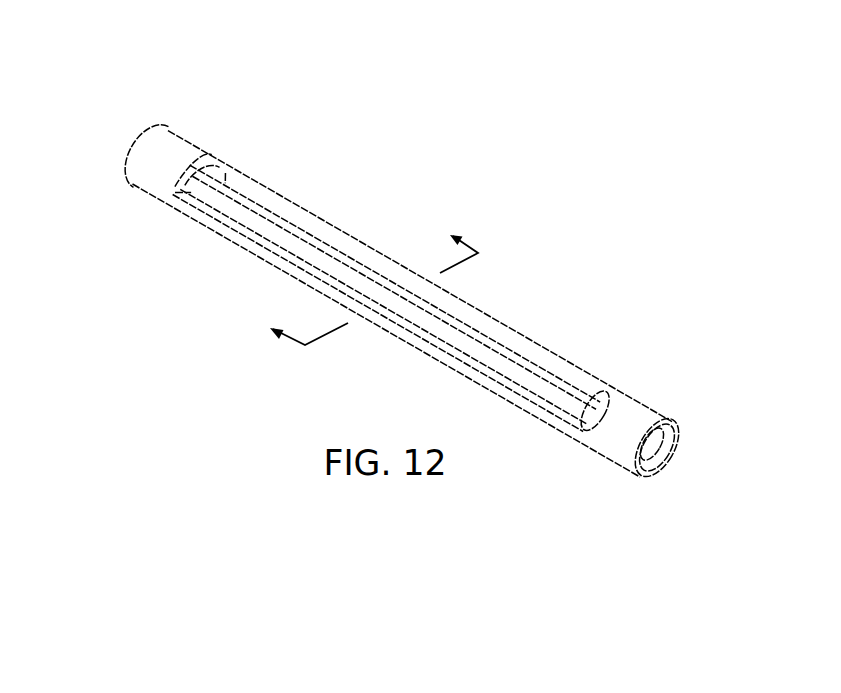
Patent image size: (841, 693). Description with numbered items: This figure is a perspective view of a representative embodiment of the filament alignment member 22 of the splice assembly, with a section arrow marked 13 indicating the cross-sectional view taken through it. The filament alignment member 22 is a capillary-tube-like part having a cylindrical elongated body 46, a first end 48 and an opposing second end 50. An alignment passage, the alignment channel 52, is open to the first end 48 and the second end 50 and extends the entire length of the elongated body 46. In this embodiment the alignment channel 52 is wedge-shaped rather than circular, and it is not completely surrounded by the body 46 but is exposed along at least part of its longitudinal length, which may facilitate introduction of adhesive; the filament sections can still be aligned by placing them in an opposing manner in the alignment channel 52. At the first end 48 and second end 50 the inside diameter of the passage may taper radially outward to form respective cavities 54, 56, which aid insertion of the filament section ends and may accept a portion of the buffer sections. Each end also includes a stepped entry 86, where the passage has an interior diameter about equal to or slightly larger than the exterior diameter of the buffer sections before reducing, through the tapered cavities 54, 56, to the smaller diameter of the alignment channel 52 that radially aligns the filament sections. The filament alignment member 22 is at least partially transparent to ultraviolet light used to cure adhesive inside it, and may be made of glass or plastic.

The filament alignment member 22 is at (181, 141).
The cylindrical elongated body 46 is at (483, 313).
The first end 48 is at (126, 160).
The second end 50 is at (684, 435).
The alignment channel 52 is at (518, 360).
The cavity 54 is at (213, 187).
The cavity 56 is at (597, 408).
The stepped entry 86 is at (197, 177).
The section line for FIG. 13 is at (357, 274).